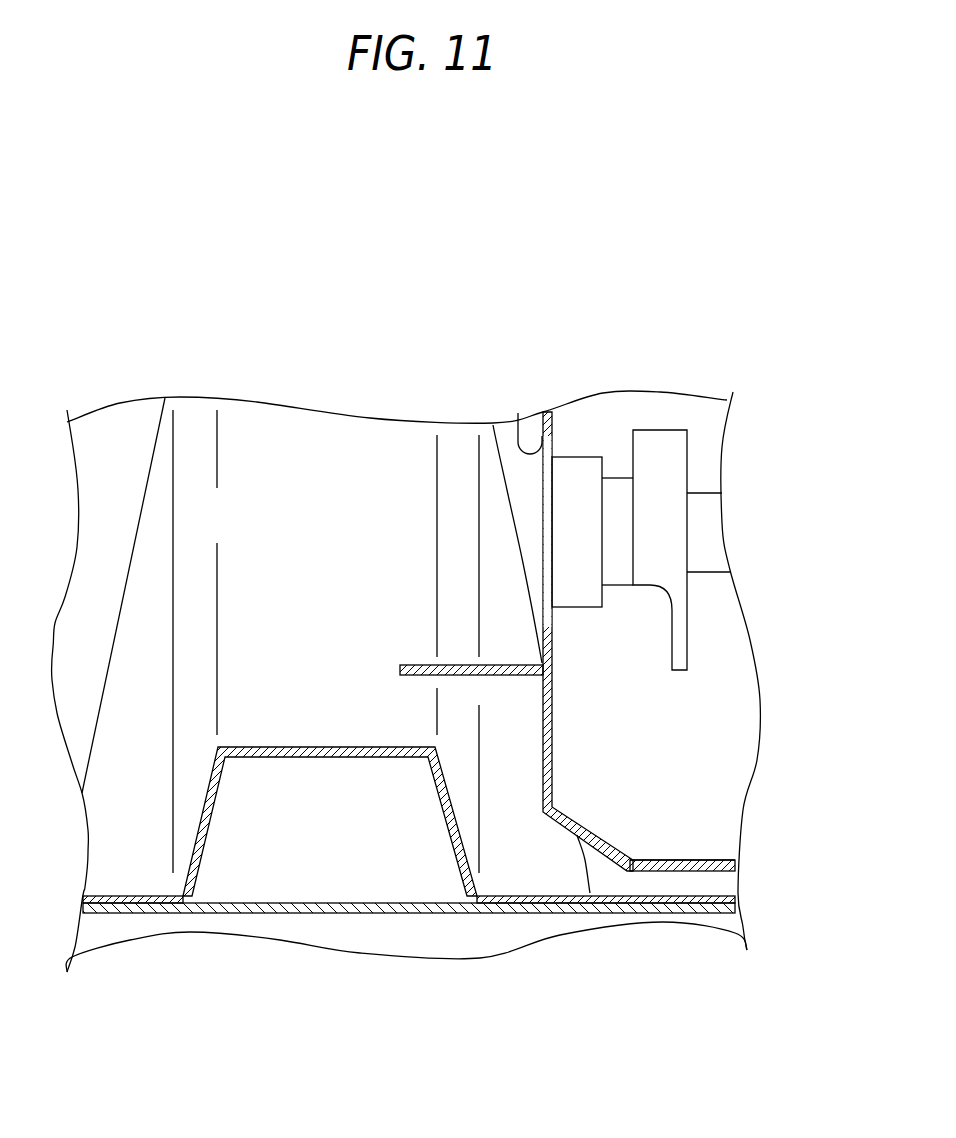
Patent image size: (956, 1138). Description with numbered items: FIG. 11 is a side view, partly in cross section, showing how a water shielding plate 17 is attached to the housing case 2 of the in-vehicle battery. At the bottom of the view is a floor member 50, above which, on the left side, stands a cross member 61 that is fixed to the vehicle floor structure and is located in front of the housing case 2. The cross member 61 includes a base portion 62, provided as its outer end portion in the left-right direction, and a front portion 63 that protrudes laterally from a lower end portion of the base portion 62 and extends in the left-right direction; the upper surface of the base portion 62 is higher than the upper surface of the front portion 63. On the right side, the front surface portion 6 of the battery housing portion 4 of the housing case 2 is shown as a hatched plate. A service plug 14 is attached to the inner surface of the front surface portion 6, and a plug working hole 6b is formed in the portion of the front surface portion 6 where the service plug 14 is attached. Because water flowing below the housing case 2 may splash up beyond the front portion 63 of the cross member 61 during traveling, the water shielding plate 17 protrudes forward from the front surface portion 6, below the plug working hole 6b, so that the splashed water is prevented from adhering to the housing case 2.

The housing case 2 is at (702, 860).
The battery housing portion 4 is at (670, 860).
The front surface portion 6 is at (561, 573).
The plug working hole 6b is at (518, 420).
The service plug 14 is at (660, 442).
The water shielding plate 17 is at (420, 665).
The floor panel 50 is at (340, 910).
The cross member 61 is at (330, 592).
The base portion 62 is at (237, 415).
The front portion 63 is at (353, 750).